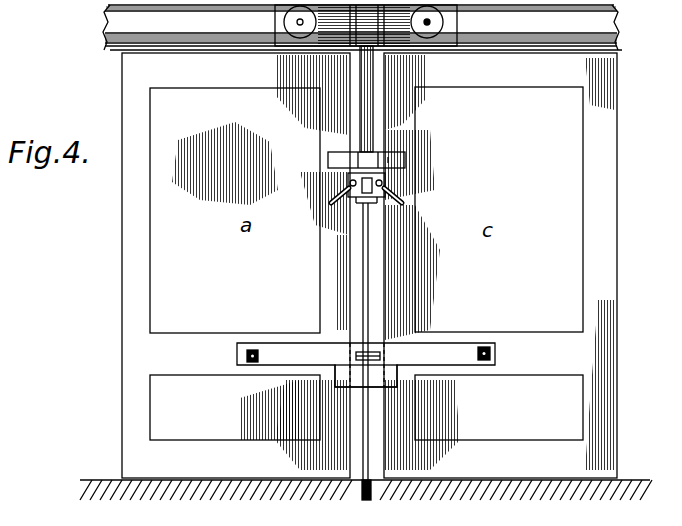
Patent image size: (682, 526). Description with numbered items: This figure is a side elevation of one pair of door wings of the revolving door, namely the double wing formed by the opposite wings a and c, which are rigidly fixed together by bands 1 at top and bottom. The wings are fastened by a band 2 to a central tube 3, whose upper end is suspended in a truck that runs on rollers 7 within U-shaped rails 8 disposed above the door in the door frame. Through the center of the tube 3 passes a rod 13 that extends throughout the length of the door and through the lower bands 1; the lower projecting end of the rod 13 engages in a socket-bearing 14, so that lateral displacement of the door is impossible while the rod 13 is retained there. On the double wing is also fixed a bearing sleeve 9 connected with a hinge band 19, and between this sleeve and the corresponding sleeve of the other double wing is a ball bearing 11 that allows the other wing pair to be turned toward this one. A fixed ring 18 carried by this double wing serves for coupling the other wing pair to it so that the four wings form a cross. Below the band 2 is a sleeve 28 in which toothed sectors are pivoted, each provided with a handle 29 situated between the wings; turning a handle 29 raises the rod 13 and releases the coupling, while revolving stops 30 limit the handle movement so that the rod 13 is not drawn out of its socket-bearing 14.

The band 1 is at (403, 55).
The band 2 is at (396, 162).
The tube 3 is at (370, 130).
The rollers 7 is at (300, 25).
The U-shaped rails 8 is at (218, 32).
The bearing sleeve 9 is at (370, 388).
The ball bearing 11 is at (378, 353).
The rod 13 is at (368, 293).
The socket-bearing 14 is at (374, 492).
The fixed ring 18 is at (248, 362).
The hinge band 19 is at (318, 355).
The sleeve 28 is at (350, 196).
The handle 29 is at (336, 196).
The revolving stops 30 is at (381, 198).